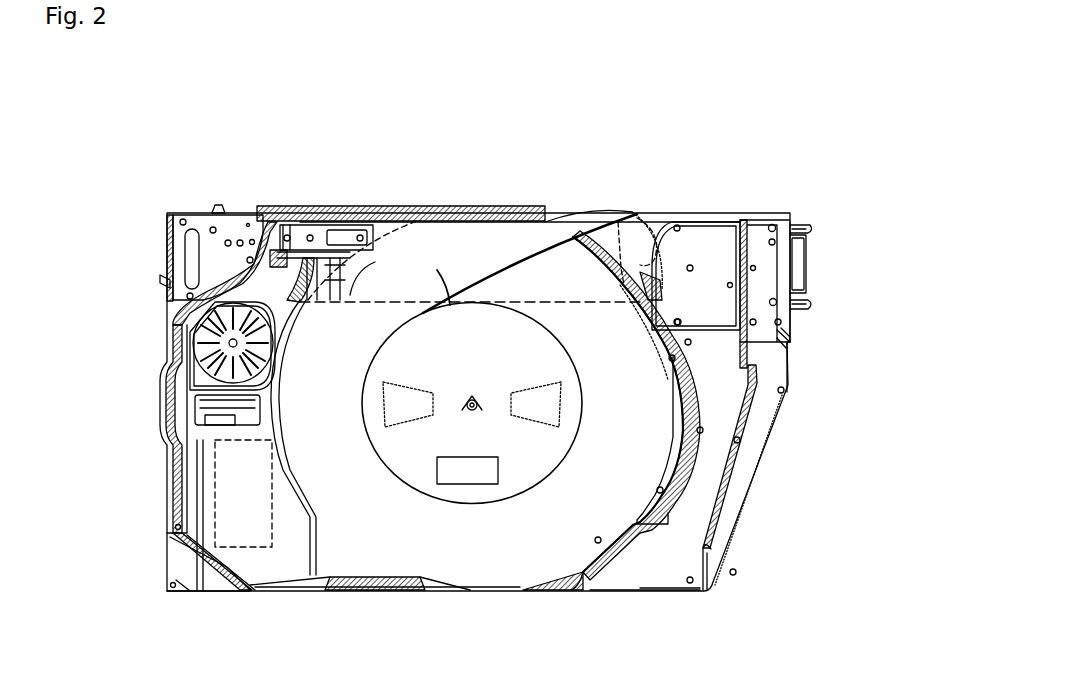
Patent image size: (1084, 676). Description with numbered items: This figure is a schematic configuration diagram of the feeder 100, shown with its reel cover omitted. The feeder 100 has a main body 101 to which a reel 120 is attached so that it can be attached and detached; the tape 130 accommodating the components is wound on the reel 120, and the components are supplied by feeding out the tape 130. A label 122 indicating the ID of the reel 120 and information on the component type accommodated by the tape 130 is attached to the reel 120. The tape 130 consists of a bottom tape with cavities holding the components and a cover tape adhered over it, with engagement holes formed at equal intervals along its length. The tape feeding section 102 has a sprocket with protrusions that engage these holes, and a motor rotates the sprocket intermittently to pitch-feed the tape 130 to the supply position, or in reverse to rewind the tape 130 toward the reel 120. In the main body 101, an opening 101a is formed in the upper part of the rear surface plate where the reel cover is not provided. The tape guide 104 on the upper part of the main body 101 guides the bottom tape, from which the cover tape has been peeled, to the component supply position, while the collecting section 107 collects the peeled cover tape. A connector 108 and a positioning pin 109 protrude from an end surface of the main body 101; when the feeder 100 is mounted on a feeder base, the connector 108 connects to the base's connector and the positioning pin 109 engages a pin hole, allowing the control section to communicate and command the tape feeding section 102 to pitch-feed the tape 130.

The feeder 100 is at (731, 93).
The main body 101 is at (184, 213).
The opening 101a is at (540, 233).
The tape feeding section 102 is at (636, 214).
The tape guide 104 is at (744, 215).
The collecting section 107 is at (212, 598).
The connector 108 is at (808, 282).
The positioning pin 109 is at (808, 234).
The reel 120 is at (413, 460).
The label 122 is at (472, 470).
The tape 130 is at (427, 260).